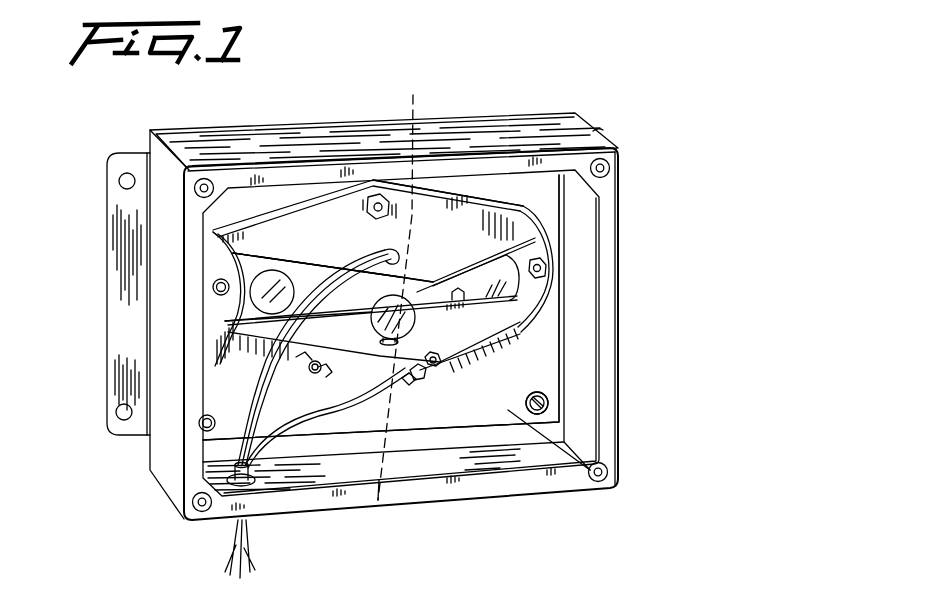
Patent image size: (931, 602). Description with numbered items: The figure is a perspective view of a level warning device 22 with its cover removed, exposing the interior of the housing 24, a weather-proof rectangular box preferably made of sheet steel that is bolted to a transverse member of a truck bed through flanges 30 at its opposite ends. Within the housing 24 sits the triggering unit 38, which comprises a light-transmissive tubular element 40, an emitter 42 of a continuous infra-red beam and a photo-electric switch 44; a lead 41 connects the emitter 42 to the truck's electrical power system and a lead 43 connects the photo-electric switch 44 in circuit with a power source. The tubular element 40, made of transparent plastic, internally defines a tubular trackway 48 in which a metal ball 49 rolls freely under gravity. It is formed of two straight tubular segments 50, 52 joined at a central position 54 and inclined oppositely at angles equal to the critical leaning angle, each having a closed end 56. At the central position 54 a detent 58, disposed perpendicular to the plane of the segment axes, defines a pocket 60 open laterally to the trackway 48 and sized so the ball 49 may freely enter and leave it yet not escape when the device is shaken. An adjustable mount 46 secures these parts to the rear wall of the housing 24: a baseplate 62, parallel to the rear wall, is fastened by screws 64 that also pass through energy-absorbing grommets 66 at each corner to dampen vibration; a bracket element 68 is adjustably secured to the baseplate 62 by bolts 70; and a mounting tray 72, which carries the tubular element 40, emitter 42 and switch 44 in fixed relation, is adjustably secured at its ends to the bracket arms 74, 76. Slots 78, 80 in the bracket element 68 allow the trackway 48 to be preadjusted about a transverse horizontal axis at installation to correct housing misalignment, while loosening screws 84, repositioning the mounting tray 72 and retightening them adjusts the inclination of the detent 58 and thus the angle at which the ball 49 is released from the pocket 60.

The level warning device 22 is at (714, 152).
The housing 24 is at (474, 120).
The flanges 30 is at (122, 297).
The triggering unit 38 is at (521, 334).
The tubular element 40 is at (545, 300).
The lead 41 is at (320, 393).
The emitter 42 is at (400, 400).
The lead 43 is at (425, 366).
The photo-electric switch 44 is at (372, 272).
The adjustable mount 46 is at (497, 197).
The tubular trackway 48 is at (421, 328).
The metal ball 49 is at (399, 285).
The tubular segment 50 is at (333, 296).
The tubular segment 52 is at (467, 277).
The central position 54 is at (430, 367).
The closed end 56 is at (222, 320).
The detent 58 is at (442, 373).
The pocket 60 is at (380, 505).
The baseplate 62 is at (605, 480).
The screws 64 is at (550, 410).
The energy-absorbing grommets 66 is at (552, 396).
The bracket element 68 is at (465, 202).
The bolts 70 is at (376, 195).
The mounting tray 72 is at (273, 257).
The bracket arm 74 is at (218, 257).
The bracket arm 76 is at (545, 262).
The slot 78 is at (293, 362).
The slot 80 is at (407, 325).
The screws 84 is at (212, 293).